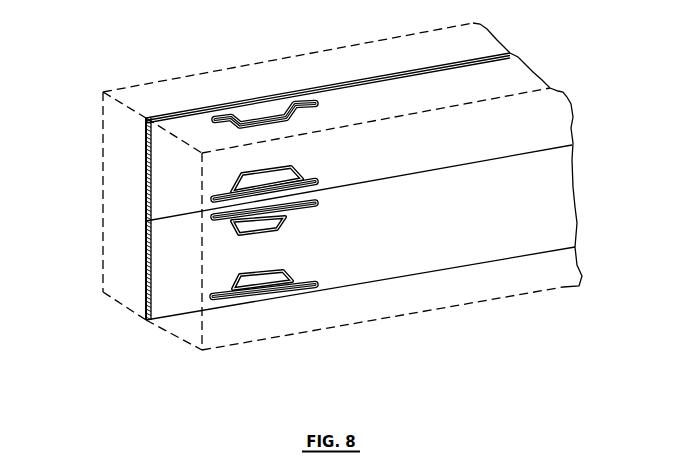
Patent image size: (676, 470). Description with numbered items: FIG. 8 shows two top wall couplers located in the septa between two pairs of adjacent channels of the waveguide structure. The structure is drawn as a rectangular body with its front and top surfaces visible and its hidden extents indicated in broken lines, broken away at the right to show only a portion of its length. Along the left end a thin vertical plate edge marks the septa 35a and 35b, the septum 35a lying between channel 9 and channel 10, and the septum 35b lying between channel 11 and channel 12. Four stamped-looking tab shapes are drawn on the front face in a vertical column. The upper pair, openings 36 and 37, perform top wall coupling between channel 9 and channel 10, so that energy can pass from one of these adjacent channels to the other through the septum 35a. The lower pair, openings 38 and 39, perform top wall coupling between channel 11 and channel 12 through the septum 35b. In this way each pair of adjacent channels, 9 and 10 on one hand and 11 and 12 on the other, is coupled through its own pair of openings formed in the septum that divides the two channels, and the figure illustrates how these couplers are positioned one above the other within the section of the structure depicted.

The channel 9 is at (258, 75).
The channel 10 is at (505, 78).
The channel 11 is at (228, 348).
The channel 12 is at (100, 273).
The septum 35a is at (147, 178).
The septum 35b is at (146, 258).
The opening 36 is at (273, 113).
The opening 37 is at (278, 182).
The opening 38 is at (273, 217).
The opening 39 is at (272, 279).